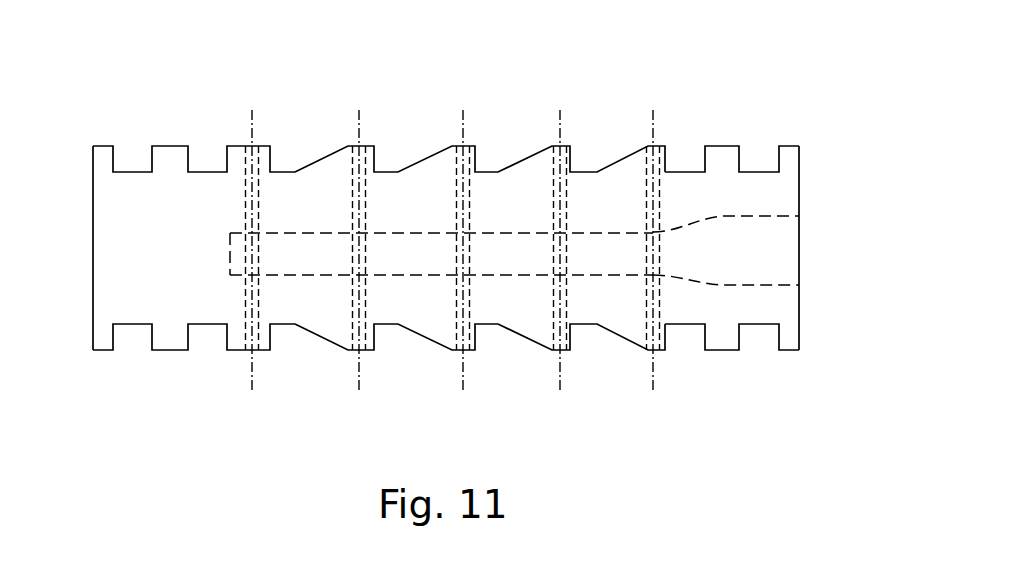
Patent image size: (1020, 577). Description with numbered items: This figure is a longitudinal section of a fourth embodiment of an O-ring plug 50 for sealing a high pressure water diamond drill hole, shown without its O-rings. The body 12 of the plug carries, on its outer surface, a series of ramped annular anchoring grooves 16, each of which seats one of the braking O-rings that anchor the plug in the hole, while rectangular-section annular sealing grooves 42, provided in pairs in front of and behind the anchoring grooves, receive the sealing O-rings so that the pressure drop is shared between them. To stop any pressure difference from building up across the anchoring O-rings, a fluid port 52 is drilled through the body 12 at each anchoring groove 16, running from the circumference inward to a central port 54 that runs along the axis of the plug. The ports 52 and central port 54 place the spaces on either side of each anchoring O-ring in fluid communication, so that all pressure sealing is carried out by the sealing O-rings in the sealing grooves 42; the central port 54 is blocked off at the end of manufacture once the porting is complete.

The body 12 is at (481, 207).
The annular anchoring grooves 16 is at (603, 132).
The annular sealing grooves 42 is at (205, 157).
The O-ring plug 50 is at (610, 90).
The fluid port 52 is at (343, 160).
The central port 54 is at (720, 257).